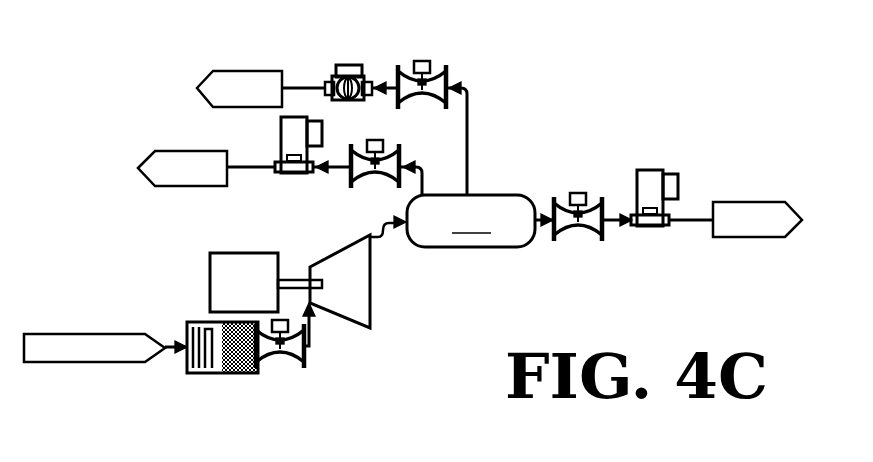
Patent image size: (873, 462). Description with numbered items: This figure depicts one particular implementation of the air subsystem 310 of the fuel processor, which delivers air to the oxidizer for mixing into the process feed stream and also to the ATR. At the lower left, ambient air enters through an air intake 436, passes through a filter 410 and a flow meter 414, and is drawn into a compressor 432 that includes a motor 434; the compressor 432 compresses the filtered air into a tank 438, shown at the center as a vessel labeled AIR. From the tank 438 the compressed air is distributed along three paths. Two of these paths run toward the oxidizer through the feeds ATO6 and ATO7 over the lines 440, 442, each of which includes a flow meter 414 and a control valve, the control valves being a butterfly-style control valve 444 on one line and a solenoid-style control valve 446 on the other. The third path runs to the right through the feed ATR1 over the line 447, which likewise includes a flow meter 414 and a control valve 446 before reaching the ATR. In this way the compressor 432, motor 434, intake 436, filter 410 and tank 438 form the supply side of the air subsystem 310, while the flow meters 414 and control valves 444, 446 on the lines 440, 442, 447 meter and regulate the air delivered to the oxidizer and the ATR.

The air subsystem 310 is at (122, 50).
The line 440 is at (323, 65).
The control valve 444 is at (355, 63).
The flow meter 414 is at (447, 63).
The line 442 is at (255, 163).
The control valve 446 is at (296, 175).
The compressor 432 is at (272, 220).
The motor 434 is at (210, 286).
The air intake 436 is at (115, 362).
The filter 410 is at (237, 373).
The tank 438 is at (475, 248).
The line 447 is at (693, 213).